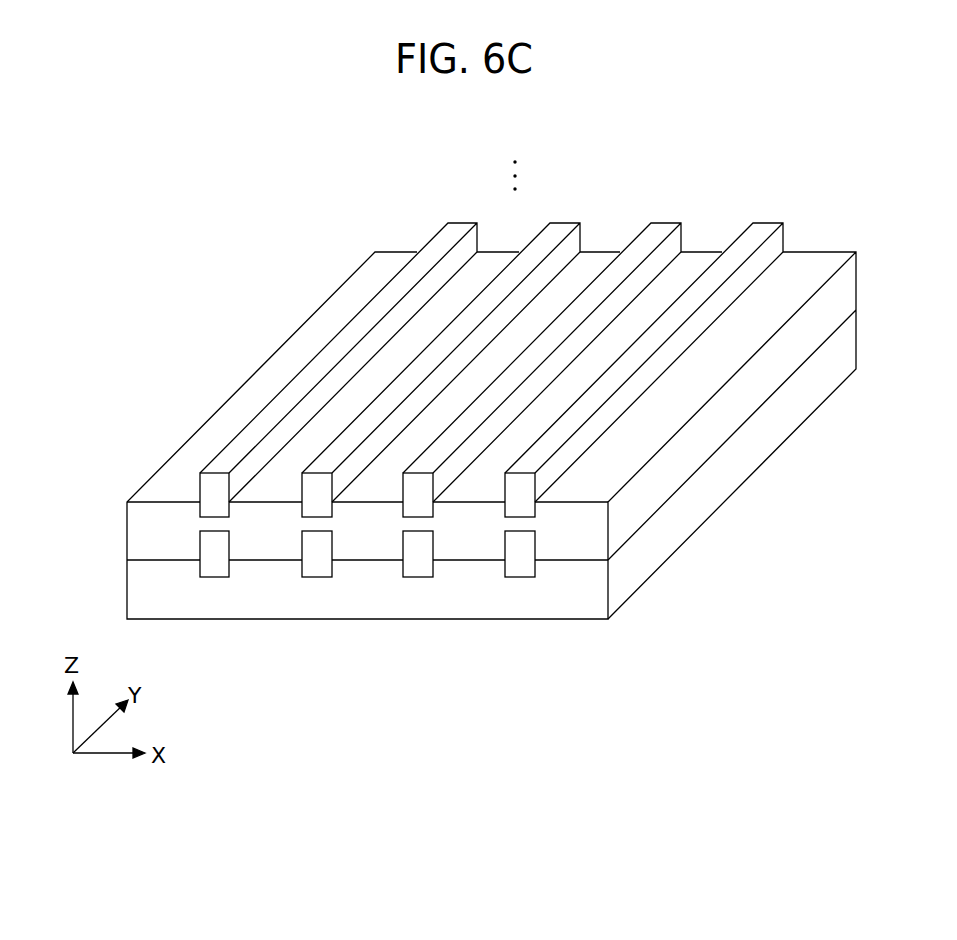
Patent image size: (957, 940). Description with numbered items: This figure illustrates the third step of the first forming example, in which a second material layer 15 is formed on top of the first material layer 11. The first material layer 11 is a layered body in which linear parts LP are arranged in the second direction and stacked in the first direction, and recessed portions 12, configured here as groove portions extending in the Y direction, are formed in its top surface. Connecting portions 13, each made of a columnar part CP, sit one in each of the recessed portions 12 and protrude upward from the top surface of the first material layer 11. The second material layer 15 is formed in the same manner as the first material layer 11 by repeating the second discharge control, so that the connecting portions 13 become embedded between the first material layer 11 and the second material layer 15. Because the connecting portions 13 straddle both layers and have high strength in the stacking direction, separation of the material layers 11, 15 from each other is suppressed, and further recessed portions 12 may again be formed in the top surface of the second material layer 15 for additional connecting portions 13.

The first material layer 11 is at (650, 545).
The recessed portions 12 is at (313, 508).
The connecting portions 13 is at (413, 367).
The second material layer 15 is at (697, 445).